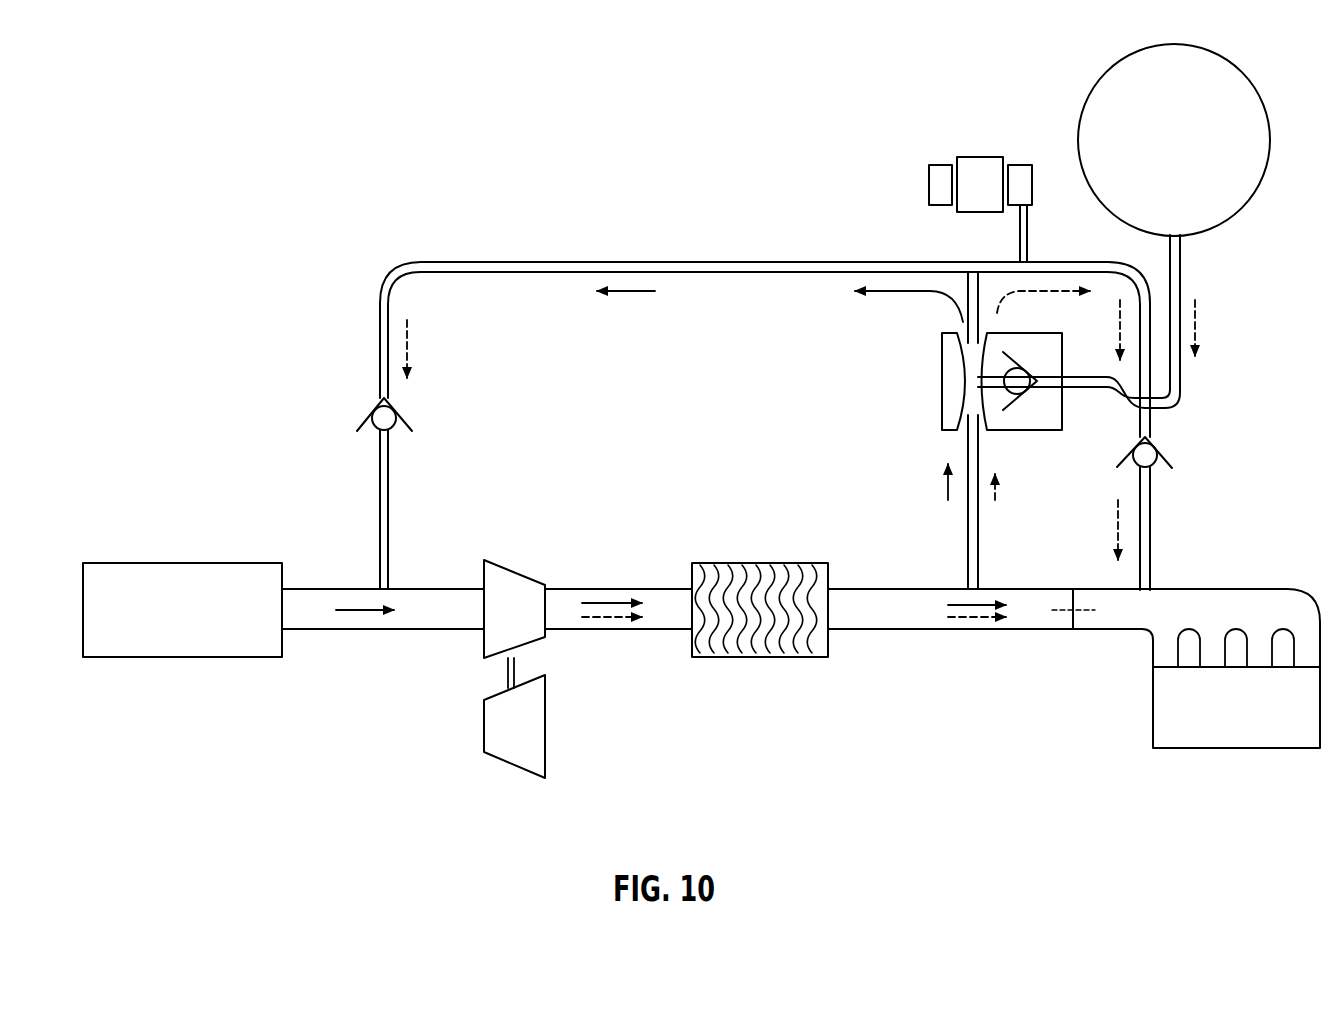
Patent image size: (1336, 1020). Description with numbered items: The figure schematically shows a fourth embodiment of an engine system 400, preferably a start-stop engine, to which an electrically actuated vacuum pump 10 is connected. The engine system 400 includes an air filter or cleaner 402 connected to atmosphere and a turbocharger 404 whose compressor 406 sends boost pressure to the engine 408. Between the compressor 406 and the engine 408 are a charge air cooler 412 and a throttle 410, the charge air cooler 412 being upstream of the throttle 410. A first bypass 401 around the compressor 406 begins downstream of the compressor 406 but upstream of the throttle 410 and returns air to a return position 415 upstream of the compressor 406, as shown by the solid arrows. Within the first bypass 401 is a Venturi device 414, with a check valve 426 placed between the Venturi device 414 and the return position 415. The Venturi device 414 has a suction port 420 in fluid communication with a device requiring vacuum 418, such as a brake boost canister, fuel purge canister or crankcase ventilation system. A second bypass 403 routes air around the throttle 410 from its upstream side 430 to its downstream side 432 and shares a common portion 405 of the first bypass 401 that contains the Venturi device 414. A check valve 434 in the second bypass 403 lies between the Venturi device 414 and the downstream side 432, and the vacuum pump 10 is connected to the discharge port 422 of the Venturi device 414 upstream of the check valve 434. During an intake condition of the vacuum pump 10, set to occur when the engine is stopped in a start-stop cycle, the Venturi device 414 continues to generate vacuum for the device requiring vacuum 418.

The engine system 400 is at (428, 108).
The first bypass 401 is at (514, 257).
The air filter or cleaner 402 is at (153, 563).
The second bypass 403 is at (1140, 282).
The turbocharger 404 is at (503, 772).
The common portion 405 is at (932, 451).
The compressor 406 is at (482, 645).
The engine 408 is at (1222, 748).
The throttle 410 is at (1075, 592).
The charge air cooler 412 is at (762, 563).
The Venturi device 414 is at (941, 382).
The return position 415 is at (378, 584).
The device requiring vacuum 418 is at (1100, 80).
The suction port 420 is at (1064, 388).
The discharge port 422 is at (951, 322).
The check valve 426 is at (400, 415).
The upstream side 430 is at (968, 584).
The downstream side 432 is at (1152, 588).
The check valve 434 is at (1168, 466).
The vacuum pump 10 is at (980, 157).